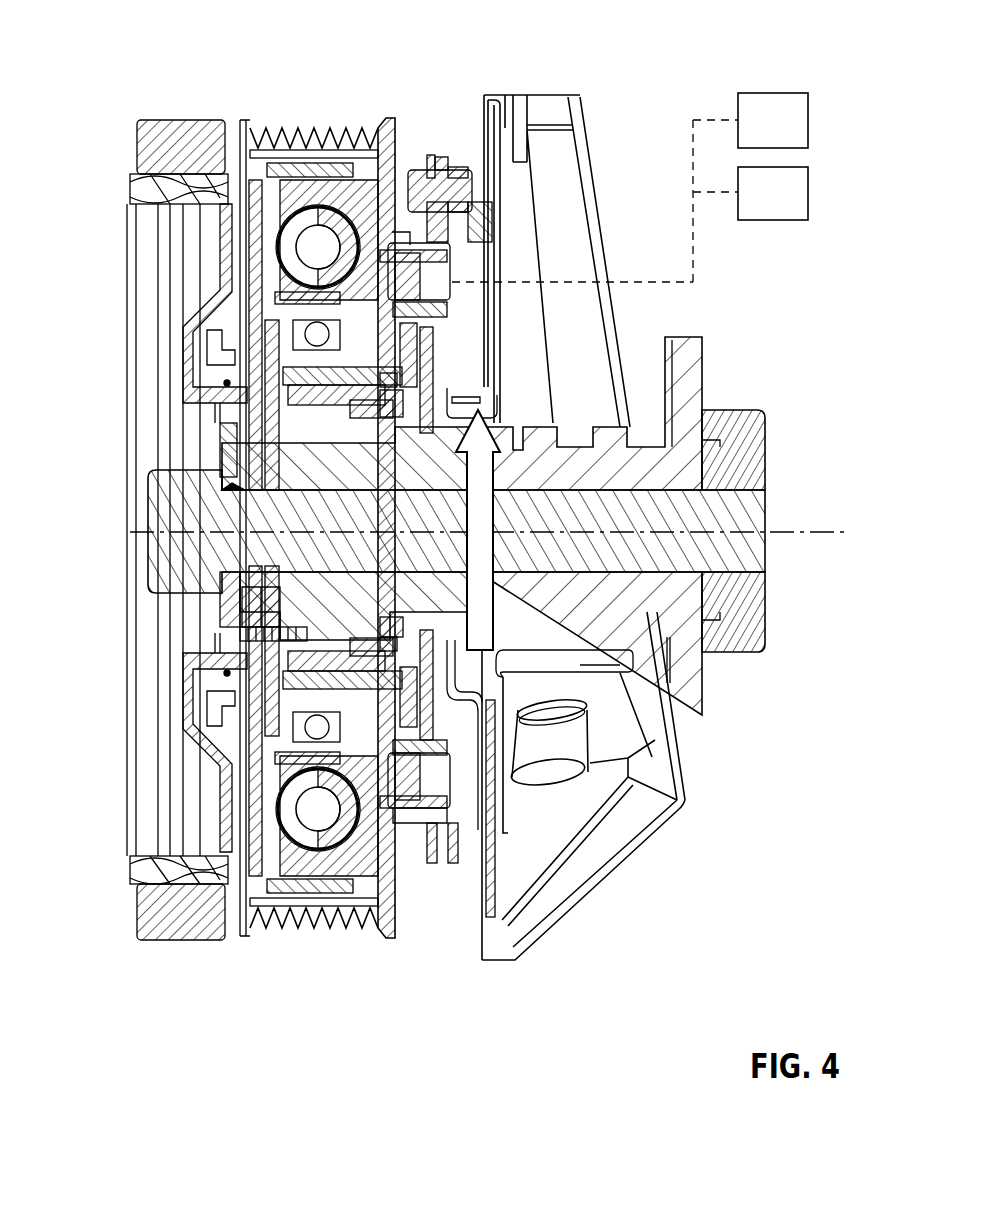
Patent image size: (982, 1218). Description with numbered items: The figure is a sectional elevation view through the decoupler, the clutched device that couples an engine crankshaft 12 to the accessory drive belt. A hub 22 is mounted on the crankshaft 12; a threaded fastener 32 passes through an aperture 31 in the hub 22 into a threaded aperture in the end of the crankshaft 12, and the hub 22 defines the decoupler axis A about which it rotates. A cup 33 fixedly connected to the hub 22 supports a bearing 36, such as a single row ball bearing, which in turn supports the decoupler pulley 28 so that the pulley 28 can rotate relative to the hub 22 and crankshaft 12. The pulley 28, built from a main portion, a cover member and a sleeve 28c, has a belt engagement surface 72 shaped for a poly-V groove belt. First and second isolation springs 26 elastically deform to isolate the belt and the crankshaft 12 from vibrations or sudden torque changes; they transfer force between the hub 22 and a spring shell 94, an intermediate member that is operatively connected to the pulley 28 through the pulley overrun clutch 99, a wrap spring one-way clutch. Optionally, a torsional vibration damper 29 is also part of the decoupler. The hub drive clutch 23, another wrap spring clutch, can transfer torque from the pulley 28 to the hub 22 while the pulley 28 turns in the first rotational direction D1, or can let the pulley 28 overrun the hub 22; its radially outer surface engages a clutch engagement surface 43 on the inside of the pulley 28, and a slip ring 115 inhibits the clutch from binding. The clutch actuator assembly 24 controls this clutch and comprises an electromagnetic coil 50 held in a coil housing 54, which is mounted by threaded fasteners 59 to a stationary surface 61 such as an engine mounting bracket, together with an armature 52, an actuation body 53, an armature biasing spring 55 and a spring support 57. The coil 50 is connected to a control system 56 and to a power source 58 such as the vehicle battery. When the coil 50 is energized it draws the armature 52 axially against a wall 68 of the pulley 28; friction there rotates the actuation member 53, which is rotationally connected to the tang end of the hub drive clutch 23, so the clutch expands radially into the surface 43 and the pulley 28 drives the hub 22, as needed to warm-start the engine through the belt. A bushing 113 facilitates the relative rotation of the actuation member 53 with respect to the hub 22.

The clutch actuator assembly 24 is at (416, 128).
The torsional vibration damper 29 is at (140, 142).
The isolation springs 26 is at (288, 232).
The spring shell 94 is at (305, 197).
The pulley overrun clutch 99 is at (282, 175).
The belt engagement surface 72 is at (302, 147).
The decoupler pulley 28 is at (345, 147).
The stationary surface 61 is at (448, 158).
The threaded fasteners 59 is at (468, 188).
The coil housing 54 is at (452, 262).
The electromagnetic coil 50 is at (438, 268).
The power source 58 is at (757, 136).
The control system 56 is at (757, 209).
The wall 68 is at (395, 307).
The actuation body 53 is at (418, 336).
The armature 52 is at (420, 348).
The armature biasing spring 55 is at (433, 375).
The spring support 57 is at (430, 390).
The clutch engagement surface 43 is at (507, 477).
The crankshaft 12 is at (758, 512).
The decoupler axis A is at (776, 537).
The first rotational direction D1 is at (482, 582).
The bearing 36 is at (302, 312).
The sleeve 28c is at (313, 377).
The hub drive clutch 23 is at (308, 400).
The cup 33 is at (273, 432).
The slip ring 115 is at (305, 468).
The hub 22 is at (305, 490).
The bushing 113 is at (307, 470).
The threaded fastener 32 is at (197, 590).
The aperture 31 is at (247, 673).